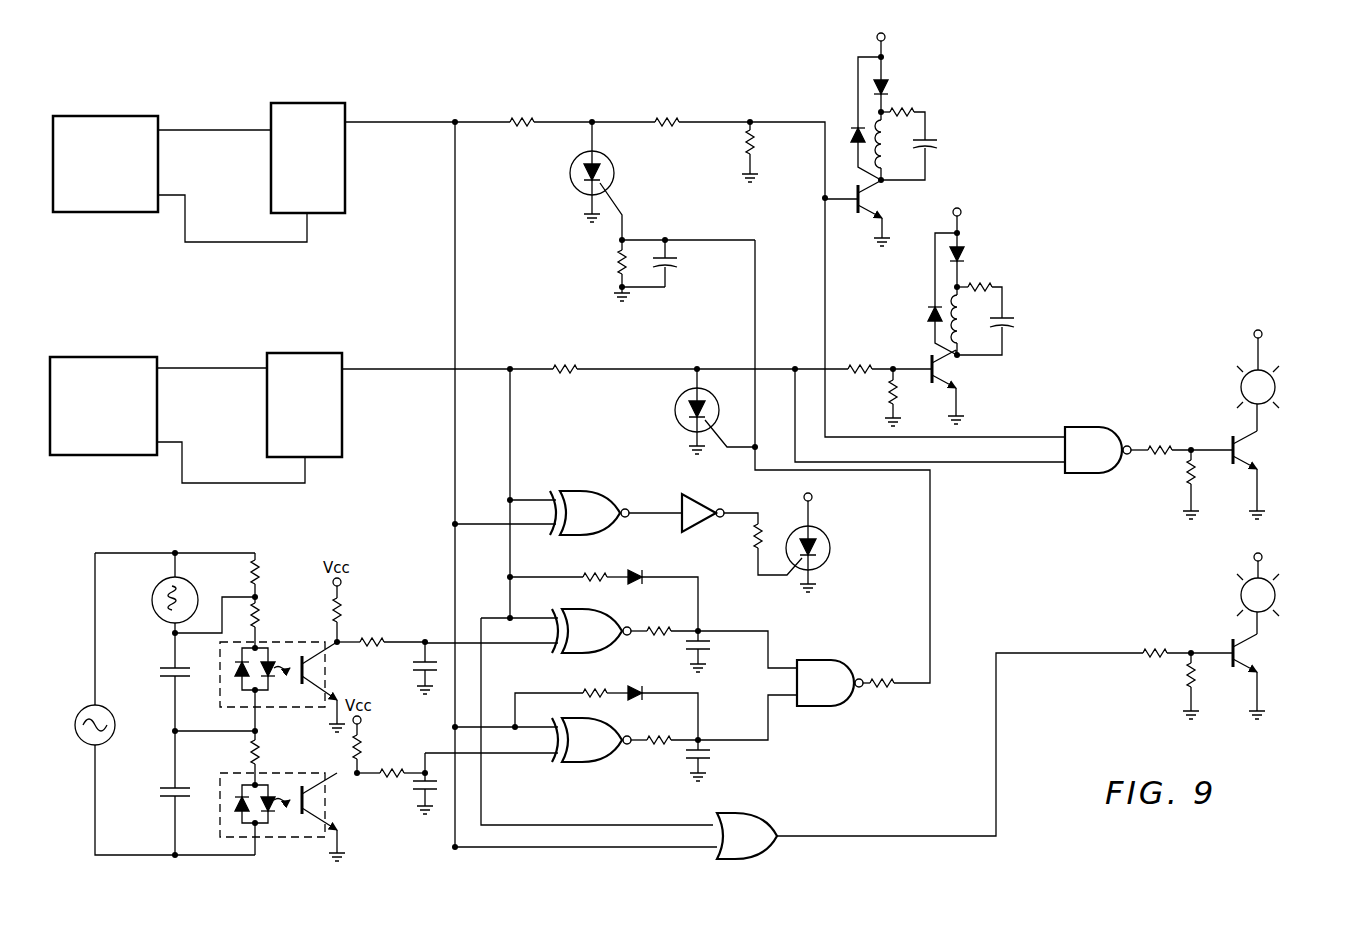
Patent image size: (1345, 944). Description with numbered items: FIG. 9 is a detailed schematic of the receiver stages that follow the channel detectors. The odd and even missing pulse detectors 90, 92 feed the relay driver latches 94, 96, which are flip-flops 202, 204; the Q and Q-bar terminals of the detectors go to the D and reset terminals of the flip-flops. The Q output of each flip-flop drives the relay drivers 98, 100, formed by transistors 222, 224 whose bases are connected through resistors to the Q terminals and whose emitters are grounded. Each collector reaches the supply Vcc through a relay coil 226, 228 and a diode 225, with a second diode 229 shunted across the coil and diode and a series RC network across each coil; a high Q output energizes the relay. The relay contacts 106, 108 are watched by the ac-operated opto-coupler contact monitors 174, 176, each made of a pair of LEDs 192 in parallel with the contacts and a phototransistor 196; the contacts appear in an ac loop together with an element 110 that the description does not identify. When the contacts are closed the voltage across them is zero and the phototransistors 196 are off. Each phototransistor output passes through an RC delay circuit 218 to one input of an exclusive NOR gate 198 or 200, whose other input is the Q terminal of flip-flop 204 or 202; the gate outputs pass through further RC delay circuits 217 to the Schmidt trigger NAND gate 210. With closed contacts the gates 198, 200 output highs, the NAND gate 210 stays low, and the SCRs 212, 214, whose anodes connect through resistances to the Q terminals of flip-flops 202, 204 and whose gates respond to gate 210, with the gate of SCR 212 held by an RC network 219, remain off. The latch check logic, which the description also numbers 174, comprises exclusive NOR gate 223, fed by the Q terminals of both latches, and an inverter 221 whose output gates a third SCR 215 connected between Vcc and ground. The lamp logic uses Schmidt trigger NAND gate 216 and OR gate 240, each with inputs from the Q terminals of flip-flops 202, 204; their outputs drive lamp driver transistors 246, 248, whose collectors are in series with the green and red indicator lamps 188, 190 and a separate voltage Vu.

The missing pulse detector 90 is at (135, 115).
The missing pulse detector 92 is at (112, 357).
The relay driver latch 94 is at (270, 101).
The relay driver latch 96 is at (265, 352).
The relay driver 98 is at (921, 176).
The relay driver 100 is at (1007, 273).
The relay contacts 106 is at (166, 668).
The relay contacts 108 is at (172, 785).
The lamp 110 is at (155, 581).
The latch check logic 174 is at (288, 640).
The contact monitor 176 is at (288, 773).
The green indicator lamp 188 is at (1280, 590).
The red indicator lamp 190 is at (1280, 385).
The LEDs 192 is at (240, 685).
The phototransistor 196 is at (312, 668).
The exclusive NOR gate 198 is at (582, 610).
The exclusive NOR gate 200 is at (610, 762).
The flip-flop 202 is at (322, 103).
The flip-flop 204 is at (321, 353).
The Schmidt trigger NAND gate 210 is at (828, 660).
The SCR 212 is at (568, 170).
The SCR 214 is at (670, 406).
The SCR 215 is at (834, 543).
The Schmidt trigger NAND gate 216 is at (1112, 428).
The RC delay circuit 217 is at (686, 746).
The RC delay circuit 218 is at (388, 630).
The RC network 219 is at (614, 269).
The inverter 221 is at (696, 494).
The transistor 222 is at (872, 195).
The exclusive NOR gate 223 is at (602, 489).
The transistor 224 is at (945, 378).
The diode 225 is at (888, 88).
The relay coil 226 is at (888, 152).
The relay coil 228 is at (964, 333).
The diode 229 is at (855, 134).
The OR gate 240 is at (790, 805).
The lamp driver 246 is at (1258, 453).
The lamp driver 248 is at (1250, 655).